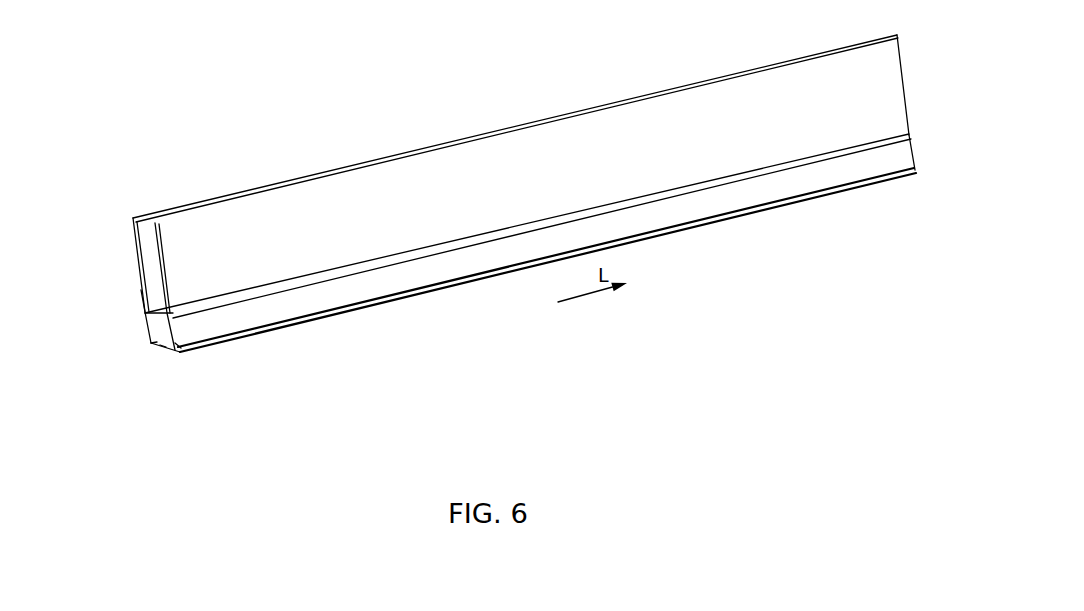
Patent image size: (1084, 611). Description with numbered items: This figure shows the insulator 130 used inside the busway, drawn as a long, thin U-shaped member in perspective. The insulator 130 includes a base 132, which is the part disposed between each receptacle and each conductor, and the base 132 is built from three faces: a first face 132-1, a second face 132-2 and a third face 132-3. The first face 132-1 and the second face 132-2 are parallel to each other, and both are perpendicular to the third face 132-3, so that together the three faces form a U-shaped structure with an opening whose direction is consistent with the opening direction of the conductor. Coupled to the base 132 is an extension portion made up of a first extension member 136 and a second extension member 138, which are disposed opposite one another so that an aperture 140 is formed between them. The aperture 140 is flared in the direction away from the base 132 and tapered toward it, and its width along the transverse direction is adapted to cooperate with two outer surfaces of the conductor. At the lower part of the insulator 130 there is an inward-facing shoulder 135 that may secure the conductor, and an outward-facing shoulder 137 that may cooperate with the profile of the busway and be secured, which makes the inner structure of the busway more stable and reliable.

The insulator 130 is at (501, 229).
The base 132 is at (501, 229).
The first face 132-1 is at (133, 242).
The second face 132-2 is at (288, 258).
The third face 132-3 is at (422, 150).
The shoulder 135 is at (170, 313).
The first extension member 136 is at (157, 342).
The shoulder 137 is at (147, 312).
The second extension member 138 is at (178, 343).
The aperture 140 is at (163, 345).